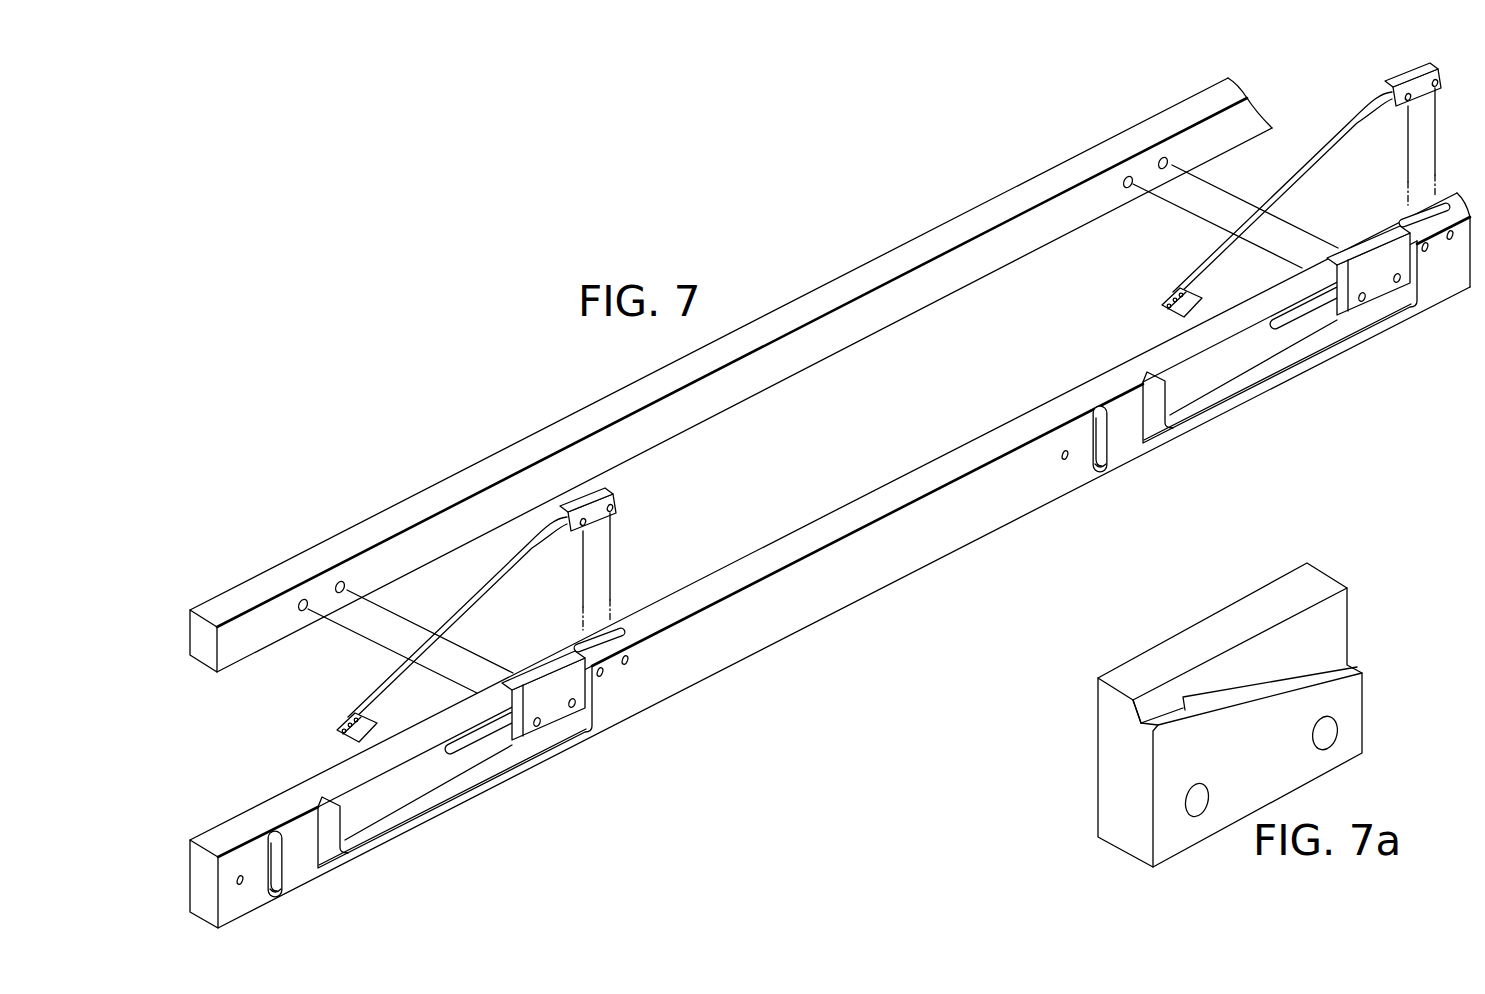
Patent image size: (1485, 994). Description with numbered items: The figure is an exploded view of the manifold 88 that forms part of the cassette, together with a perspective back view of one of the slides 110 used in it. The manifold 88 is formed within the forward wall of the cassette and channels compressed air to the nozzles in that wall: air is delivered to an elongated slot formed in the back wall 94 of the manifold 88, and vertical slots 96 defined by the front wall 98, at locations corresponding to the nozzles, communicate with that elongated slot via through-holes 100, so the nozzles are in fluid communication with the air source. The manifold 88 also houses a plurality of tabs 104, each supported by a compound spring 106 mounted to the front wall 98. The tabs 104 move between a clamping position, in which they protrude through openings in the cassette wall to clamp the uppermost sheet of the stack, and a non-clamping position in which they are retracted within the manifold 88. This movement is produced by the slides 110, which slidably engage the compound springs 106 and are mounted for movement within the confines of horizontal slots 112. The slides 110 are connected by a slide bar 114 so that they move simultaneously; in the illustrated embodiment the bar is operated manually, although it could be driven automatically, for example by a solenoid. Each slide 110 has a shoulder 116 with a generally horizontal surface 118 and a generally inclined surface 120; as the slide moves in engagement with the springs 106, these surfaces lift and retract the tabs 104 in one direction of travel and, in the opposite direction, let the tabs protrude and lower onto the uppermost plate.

In FIG. 7, the manifold 88 is at (907, 462).
In FIG. 7, the back wall of the manifold 94 is at (732, 577).
In FIG. 7, the vertical slot 96 is at (283, 857).
In FIG. 7, the front wall of the manifold 98 is at (753, 620).
In FIG. 7, the through-hole 100 is at (277, 884).
In FIG. 7, the tab 104 is at (350, 732).
In FIG. 7, the compound spring 106 is at (535, 542).
In FIG. 7, the slide 110 is at (553, 717).
In FIG. 7A, the slide 110 is at (1230, 715).
In FIG. 7, the horizontal slot 112 is at (470, 745).
In FIG. 7, the slide bar 114 is at (343, 547).
In FIG. 7A, the shoulder 116 is at (1190, 728).
In FIG. 7A, the horizontal surface 118 is at (1162, 715).
In FIG. 7A, the inclined surface 120 is at (1248, 690).